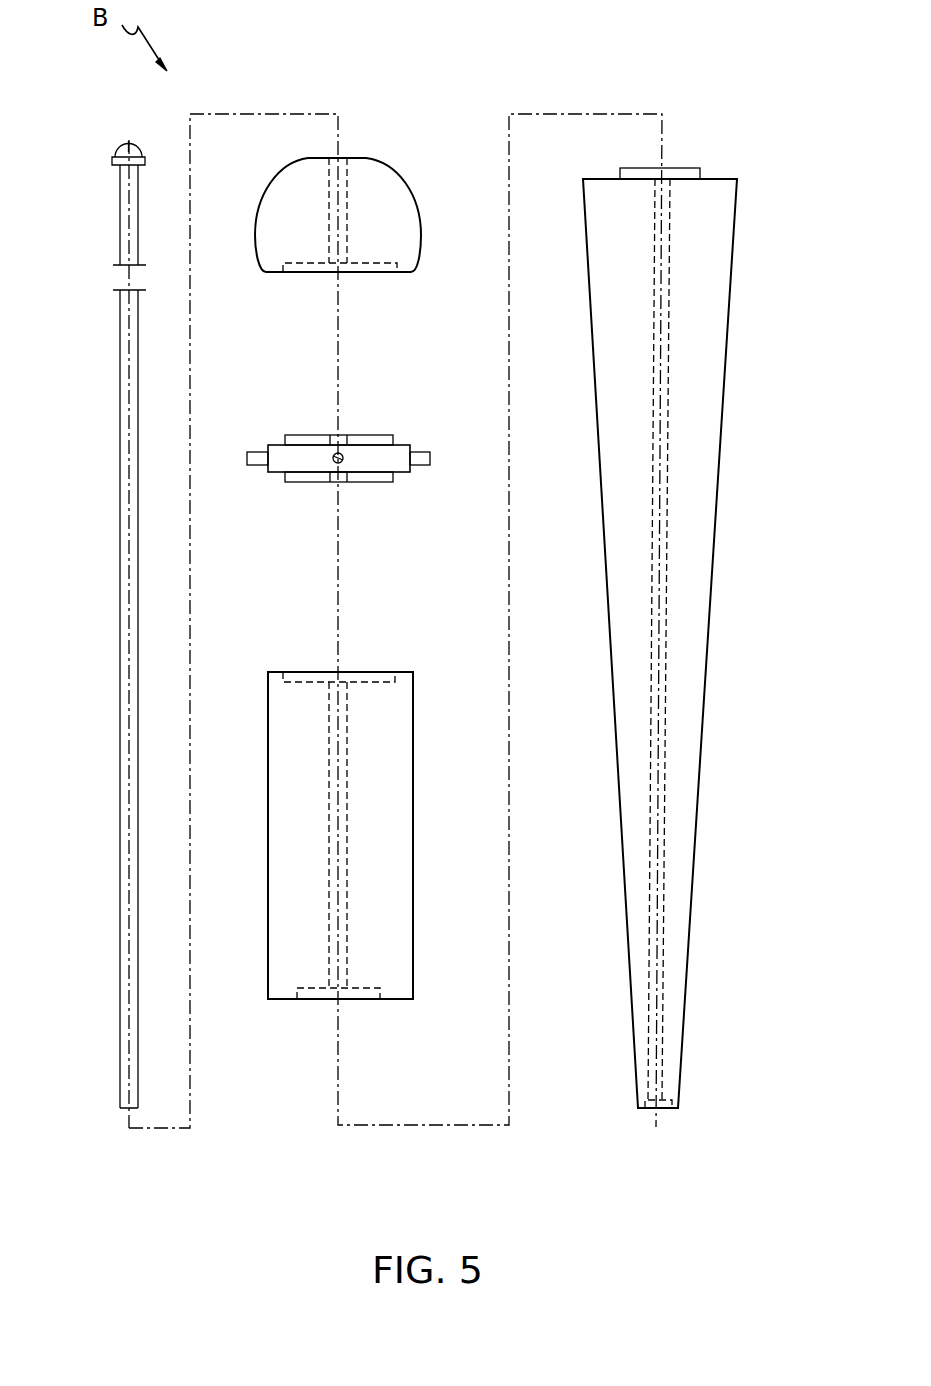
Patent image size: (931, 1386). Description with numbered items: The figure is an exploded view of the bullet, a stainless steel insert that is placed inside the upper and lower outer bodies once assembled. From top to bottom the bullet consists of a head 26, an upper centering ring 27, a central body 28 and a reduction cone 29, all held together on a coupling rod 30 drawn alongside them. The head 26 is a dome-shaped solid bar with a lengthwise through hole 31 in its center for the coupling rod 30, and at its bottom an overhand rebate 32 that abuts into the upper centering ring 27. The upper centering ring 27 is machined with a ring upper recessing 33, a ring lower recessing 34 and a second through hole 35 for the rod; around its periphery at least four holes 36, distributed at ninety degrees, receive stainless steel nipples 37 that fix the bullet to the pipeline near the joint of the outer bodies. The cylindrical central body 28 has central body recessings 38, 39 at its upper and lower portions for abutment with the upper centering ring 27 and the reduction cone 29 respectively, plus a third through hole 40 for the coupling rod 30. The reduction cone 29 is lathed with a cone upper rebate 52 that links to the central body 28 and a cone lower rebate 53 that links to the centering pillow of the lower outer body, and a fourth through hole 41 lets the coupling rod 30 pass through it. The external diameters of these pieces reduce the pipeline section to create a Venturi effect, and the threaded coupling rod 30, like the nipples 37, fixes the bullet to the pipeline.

The head 26 is at (306, 227).
The upper centering ring 27 is at (388, 436).
The central body 28 is at (408, 768).
The reduction cone 29 is at (716, 535).
The coupling rod 30 is at (120, 340).
The through hole 31 is at (346, 157).
The overhand rebate 32 is at (378, 267).
The ring upper recessing 33 is at (285, 435).
The ring lower recessing 34 is at (281, 483).
The second through hole 35 is at (350, 483).
The holes 36 is at (339, 452).
The nipples 37 is at (247, 461).
The central body recessing 38 is at (305, 676).
The central body recessing 39 is at (318, 1002).
The third through hole 40 is at (340, 912).
The fourth through hole 41 is at (666, 711).
The cone upper rebate 52 is at (712, 172).
The cone lower rebate 53 is at (668, 1110).